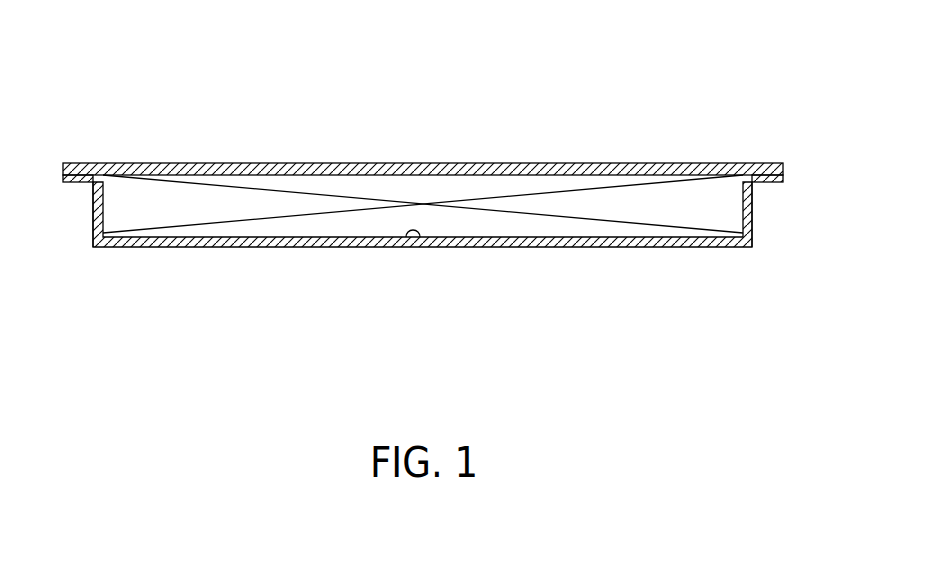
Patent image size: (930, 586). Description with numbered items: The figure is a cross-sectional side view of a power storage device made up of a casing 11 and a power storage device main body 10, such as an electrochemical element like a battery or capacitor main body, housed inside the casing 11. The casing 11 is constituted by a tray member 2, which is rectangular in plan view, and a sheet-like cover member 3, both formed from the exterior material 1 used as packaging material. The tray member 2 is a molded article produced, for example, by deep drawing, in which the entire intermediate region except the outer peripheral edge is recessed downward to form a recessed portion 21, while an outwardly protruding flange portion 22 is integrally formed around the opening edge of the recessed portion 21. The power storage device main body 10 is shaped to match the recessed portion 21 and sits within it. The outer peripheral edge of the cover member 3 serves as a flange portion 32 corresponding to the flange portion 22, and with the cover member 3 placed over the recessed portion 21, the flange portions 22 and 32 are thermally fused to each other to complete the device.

The exterior material 1 is at (472, 163).
The tray member 2 is at (188, 238).
The cover member 3 is at (245, 163).
The power storage device main body 10 is at (527, 205).
The casing 11 is at (263, 60).
The recessed portion 21 is at (408, 240).
The flange portion 22 is at (77, 183).
The flange portion 32 is at (77, 163).